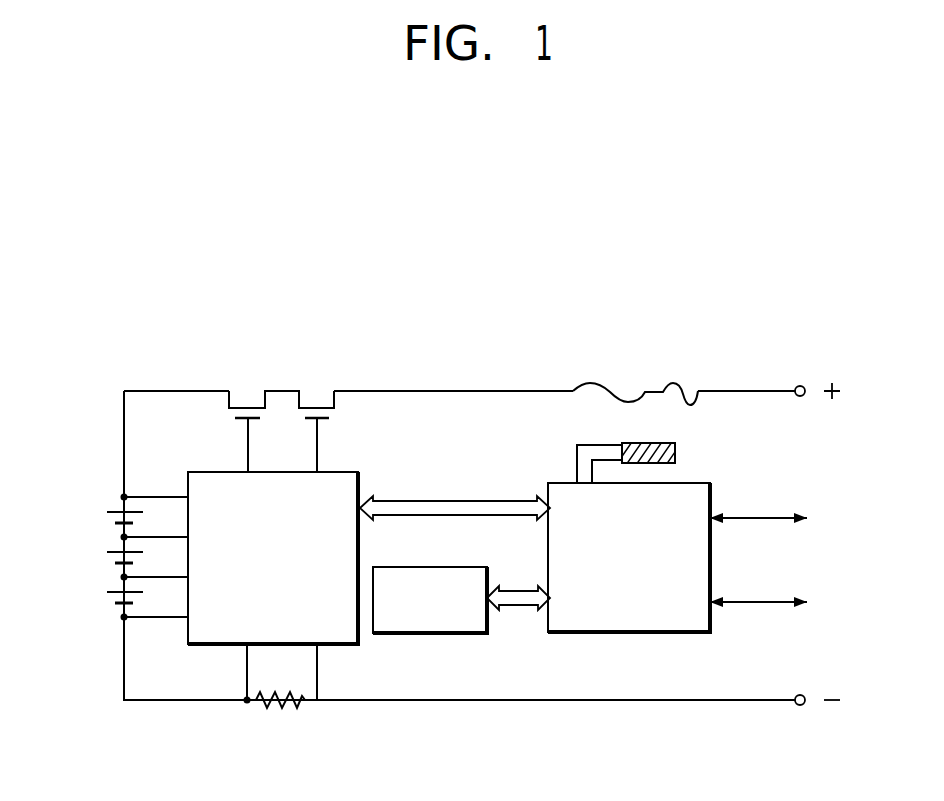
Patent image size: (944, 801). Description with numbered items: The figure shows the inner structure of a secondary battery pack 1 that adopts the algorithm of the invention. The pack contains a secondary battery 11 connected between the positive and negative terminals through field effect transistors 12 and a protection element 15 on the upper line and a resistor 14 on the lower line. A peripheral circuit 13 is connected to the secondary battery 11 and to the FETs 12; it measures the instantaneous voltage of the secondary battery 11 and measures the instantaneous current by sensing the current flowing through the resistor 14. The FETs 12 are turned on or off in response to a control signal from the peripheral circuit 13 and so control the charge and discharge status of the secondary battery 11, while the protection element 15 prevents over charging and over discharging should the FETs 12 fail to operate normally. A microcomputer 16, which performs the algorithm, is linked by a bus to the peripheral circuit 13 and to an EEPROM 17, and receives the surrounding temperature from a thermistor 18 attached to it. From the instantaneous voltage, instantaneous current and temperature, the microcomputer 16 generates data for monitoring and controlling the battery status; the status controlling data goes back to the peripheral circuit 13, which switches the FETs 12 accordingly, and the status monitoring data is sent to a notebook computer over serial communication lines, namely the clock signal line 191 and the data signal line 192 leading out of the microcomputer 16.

The secondary battery pack 1 is at (790, 345).
The secondary battery 11 is at (100, 569).
The field effect transistors 12 is at (287, 380).
The peripheral circuit 13 is at (358, 472).
The resistor 14 is at (277, 710).
The protection element 15 is at (648, 391).
The microcomputer 16 is at (630, 633).
The electrically erasable and programmable read only memory (EEPROM) 17 is at (435, 633).
The thermistor 18 is at (677, 450).
The SMCLK clock line 191 is at (757, 515).
The SMDT data line 192 is at (757, 599).